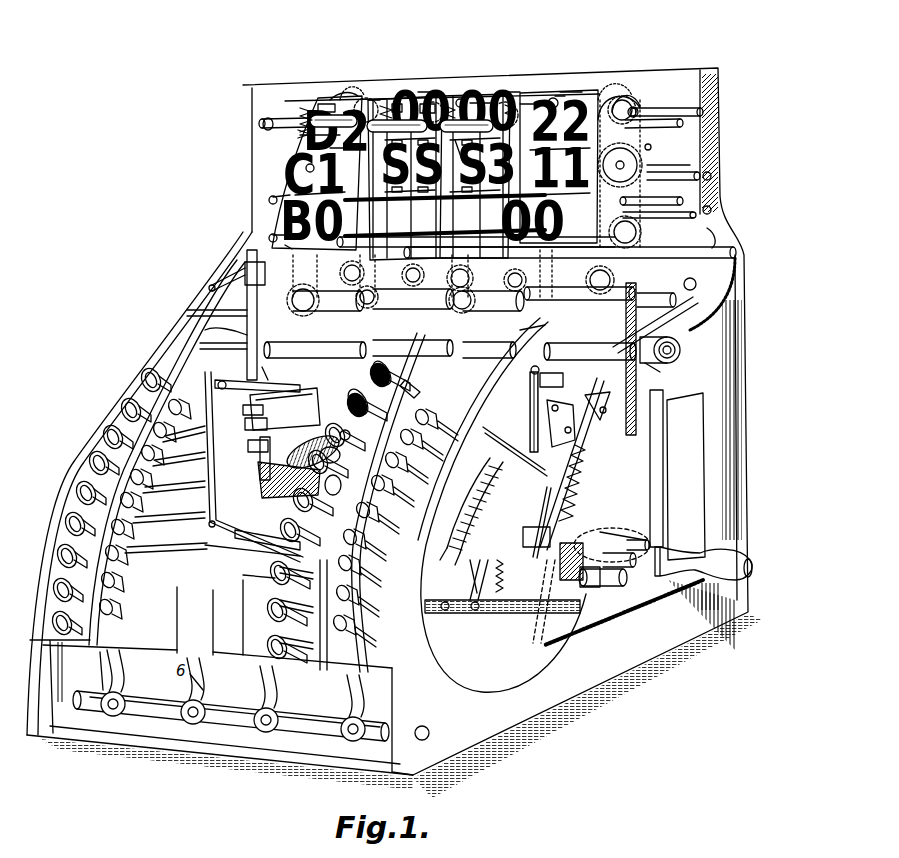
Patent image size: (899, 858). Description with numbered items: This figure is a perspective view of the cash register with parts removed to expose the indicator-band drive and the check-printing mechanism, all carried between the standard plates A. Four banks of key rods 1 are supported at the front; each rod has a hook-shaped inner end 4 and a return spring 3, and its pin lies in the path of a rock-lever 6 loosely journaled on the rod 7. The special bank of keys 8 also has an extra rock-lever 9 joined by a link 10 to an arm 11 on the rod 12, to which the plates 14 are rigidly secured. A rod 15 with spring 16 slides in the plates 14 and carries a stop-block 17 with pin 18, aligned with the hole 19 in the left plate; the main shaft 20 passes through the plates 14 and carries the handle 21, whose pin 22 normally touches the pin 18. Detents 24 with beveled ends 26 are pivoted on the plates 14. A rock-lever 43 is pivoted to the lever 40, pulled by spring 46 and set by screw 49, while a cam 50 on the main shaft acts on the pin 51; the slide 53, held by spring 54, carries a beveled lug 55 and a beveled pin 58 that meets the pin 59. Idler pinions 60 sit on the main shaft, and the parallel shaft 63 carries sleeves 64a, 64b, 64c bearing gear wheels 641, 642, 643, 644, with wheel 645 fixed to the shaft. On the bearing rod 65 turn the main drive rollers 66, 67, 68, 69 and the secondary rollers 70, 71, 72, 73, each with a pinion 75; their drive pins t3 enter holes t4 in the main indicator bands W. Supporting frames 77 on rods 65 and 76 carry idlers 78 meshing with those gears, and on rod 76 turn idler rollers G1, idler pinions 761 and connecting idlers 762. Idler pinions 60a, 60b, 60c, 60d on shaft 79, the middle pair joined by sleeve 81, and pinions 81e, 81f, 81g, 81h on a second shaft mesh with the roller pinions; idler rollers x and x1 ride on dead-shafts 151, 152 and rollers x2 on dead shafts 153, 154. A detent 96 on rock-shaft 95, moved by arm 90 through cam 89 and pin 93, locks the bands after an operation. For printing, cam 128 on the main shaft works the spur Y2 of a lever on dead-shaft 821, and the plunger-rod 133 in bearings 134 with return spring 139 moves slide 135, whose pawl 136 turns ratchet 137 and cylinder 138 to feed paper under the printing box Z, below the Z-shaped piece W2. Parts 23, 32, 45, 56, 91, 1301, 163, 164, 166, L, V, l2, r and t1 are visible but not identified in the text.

The standard plate A is at (257, 127).
The key rod 1 is at (372, 517).
The return spring 3 is at (360, 548).
The inner end of key rod 4 is at (471, 567).
The rock-lever 6 is at (455, 495).
The rod 7 is at (429, 731).
The special bank of keys 8 is at (85, 540).
The extra rock-lever 9 is at (113, 680).
The link 10 is at (235, 522).
The arm 11 is at (240, 550).
The rod 12 is at (622, 586).
The plate 14 is at (553, 513).
The rod 15 is at (450, 570).
The spring 16 is at (569, 565).
The stop-block 17 is at (605, 533).
The pin 18 is at (640, 539).
The hole 19 is at (240, 533).
The main shaft 20 is at (680, 350).
The handle 21 is at (685, 455).
The pin 22 is at (660, 547).
The block 23 is at (525, 532).
The detent 24 is at (475, 612).
The beveled projecting end 26 is at (444, 612).
The spring rod 32 is at (628, 430).
The lever 40 is at (560, 415).
The rock-lever 43 is at (600, 396).
The shaft 45 is at (590, 334).
The spring 46 is at (578, 478).
The screw 49 is at (603, 417).
The cam 50 is at (551, 381).
The pin 51 is at (503, 360).
The slide 53 is at (475, 470).
The spring 54 is at (500, 615).
The beveled lug 55 is at (532, 410).
The pivot 56 is at (534, 380).
The beveled edge-pin 58 is at (528, 420).
The beveled edge-pin 59 is at (503, 443).
The idler pinion 60 is at (683, 108).
The idler pinion 60a is at (305, 105).
The idler pinion 60b is at (382, 108).
The idler pinion 60c is at (448, 105).
The idler pinion 60d is at (513, 97).
The shaft 63 is at (682, 280).
The sleeve 64a is at (352, 274).
The sleeve 64b is at (415, 276).
The sleeve 64c is at (507, 279).
The gear wheel 641 is at (335, 312).
The gear wheel 642 is at (412, 310).
The gear wheel 643 is at (455, 278).
The gear wheel 644 is at (490, 312).
The gear wheel 645 is at (595, 280).
The bearing rod 65 is at (628, 108).
The main drive roller 66 is at (610, 100).
The main drive roller 67 is at (560, 97).
The main drive roller 68 is at (327, 103).
The main drive roller 69 is at (373, 100).
The secondary drive roller 70 is at (530, 104).
The secondary drive roller 71 is at (480, 100).
The secondary drive roller 72 is at (463, 100).
The secondary drive roller 73 is at (399, 110).
The pinion 75 is at (553, 100).
The bearing rod 76 is at (682, 201).
The idler pinion 761 is at (680, 158).
The idler 762 is at (652, 147).
The supporting frame 77 is at (333, 100).
The idler 78 is at (407, 387).
The shaft 79 is at (268, 117).
The sleeve 81 is at (429, 105).
The idler pinion 81e is at (430, 84).
The idler pinion 81f is at (510, 84).
The idler pinion 81g is at (572, 84).
The idler pinion 81h is at (670, 120).
The dead-shaft 821 is at (660, 335).
The cam 89 is at (662, 370).
The arm 90 is at (697, 300).
The pin 91 is at (678, 355).
The pin 93 is at (693, 331).
The rock-shaft 95 is at (736, 253).
The detent 96 is at (708, 238).
The cam 128 is at (205, 331).
The key 1301 is at (372, 380).
The plunger-rod 133 is at (285, 409).
The bearing 134 is at (250, 428).
The slide 135 is at (250, 448).
The pawl 136 is at (285, 462).
The ratchet 137 is at (262, 478).
The cylinder 138 is at (280, 495).
The return spring 139 is at (248, 412).
The dead-shaft 151 is at (270, 200).
The dead-shaft 152 is at (270, 238).
The dead shaft 153 is at (710, 175).
The dead shaft 154 is at (710, 210).
The pin 163 is at (335, 490).
The pin 164 is at (336, 458).
The pin 166 is at (350, 435).
The idler roller G1 is at (672, 173).
The lever L is at (209, 288).
The bar V is at (240, 405).
The main indicator band W is at (300, 160).
The Z-shaped piece W2 is at (245, 264).
The spur Y2 is at (206, 312).
The printing box Z is at (350, 404).
The bar l2 is at (247, 330).
The bracket r is at (212, 390).
The lever t1 is at (456, 155).
The drive pin t3 is at (455, 105).
The punched hole t4 is at (298, 133).
The idler roller x is at (450, 210).
The idler roller x1 is at (290, 215).
The idler roller x2 is at (290, 245).